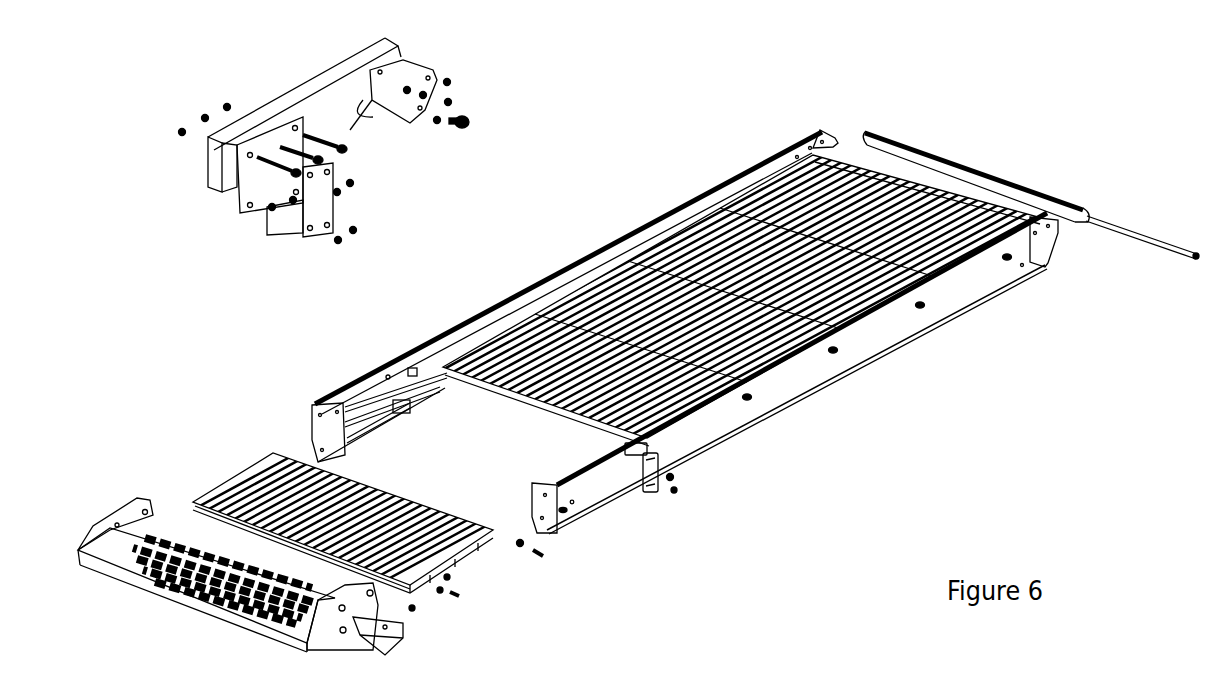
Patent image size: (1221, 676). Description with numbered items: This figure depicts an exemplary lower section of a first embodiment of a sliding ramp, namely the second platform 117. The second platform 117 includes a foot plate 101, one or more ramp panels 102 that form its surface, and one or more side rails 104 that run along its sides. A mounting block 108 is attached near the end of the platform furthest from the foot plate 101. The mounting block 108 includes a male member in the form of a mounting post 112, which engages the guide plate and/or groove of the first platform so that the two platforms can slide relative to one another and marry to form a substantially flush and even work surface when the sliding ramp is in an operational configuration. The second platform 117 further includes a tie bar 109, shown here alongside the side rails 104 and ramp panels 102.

The foot plate 101 is at (197, 533).
The ramp panel 102 is at (303, 458).
The side rail 104 is at (432, 337).
The mounting block 108 is at (400, 42).
The tie bar 109 is at (987, 168).
The mounting post 112 is at (472, 120).
The second platform 117 is at (998, 388).